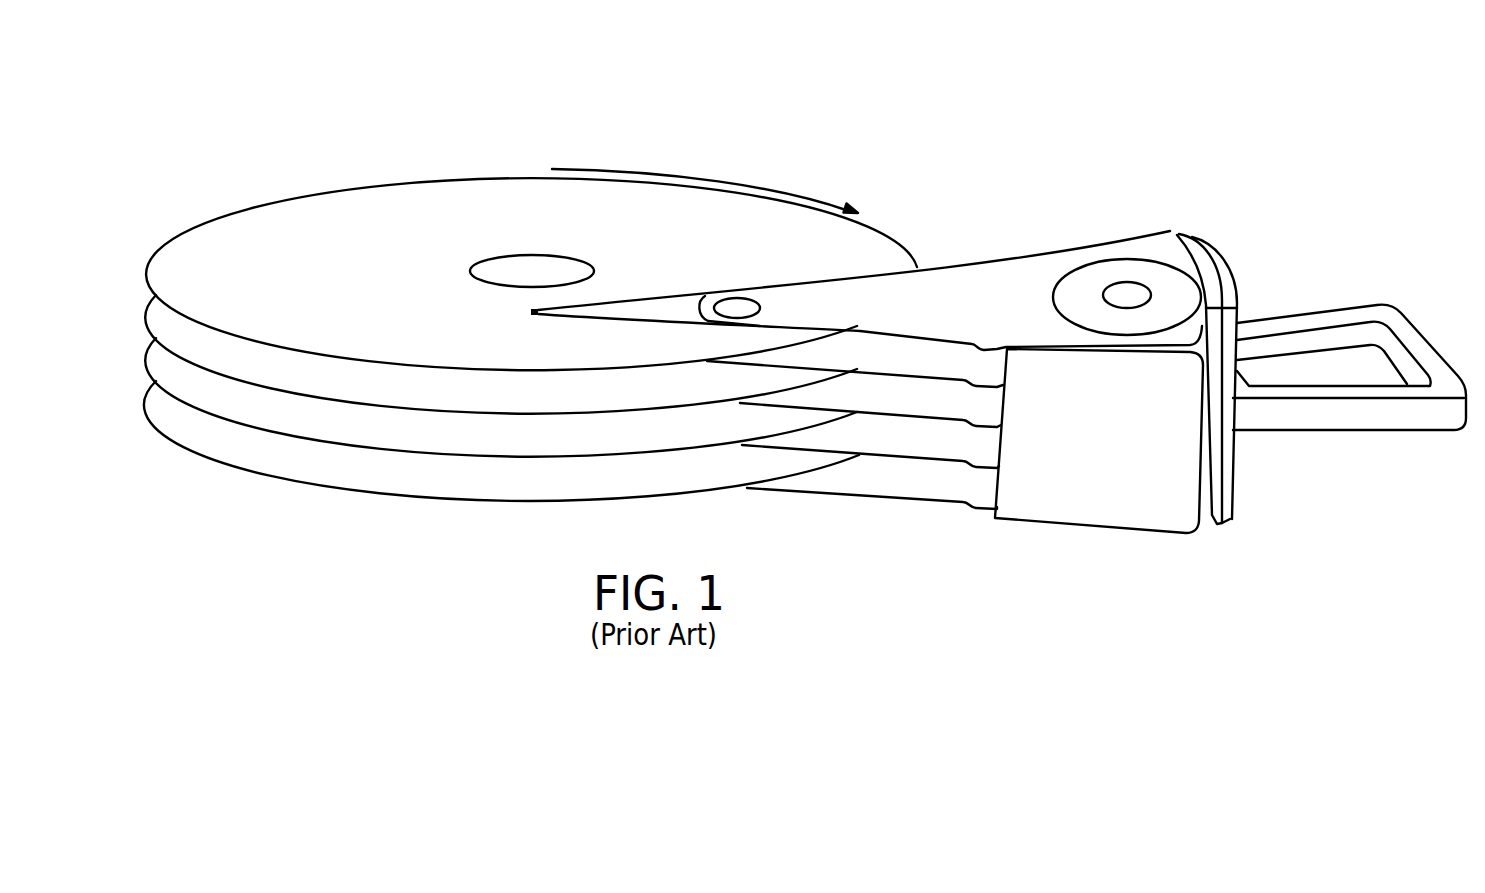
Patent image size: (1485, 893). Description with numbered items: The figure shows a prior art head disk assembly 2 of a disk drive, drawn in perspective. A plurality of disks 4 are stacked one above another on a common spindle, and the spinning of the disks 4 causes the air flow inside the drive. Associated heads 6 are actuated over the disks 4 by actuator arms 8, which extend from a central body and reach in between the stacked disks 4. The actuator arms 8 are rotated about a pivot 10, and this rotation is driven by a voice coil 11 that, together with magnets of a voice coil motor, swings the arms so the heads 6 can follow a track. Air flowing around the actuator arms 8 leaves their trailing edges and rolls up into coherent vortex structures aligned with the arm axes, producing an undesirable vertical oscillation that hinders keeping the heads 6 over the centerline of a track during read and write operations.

The head disk assembly 2 is at (290, 93).
The disks 4 is at (244, 218).
The heads 6 is at (536, 318).
The actuator arms 8 is at (971, 342).
The pivot 10 is at (1122, 295).
The voice coil 11 is at (1365, 318).